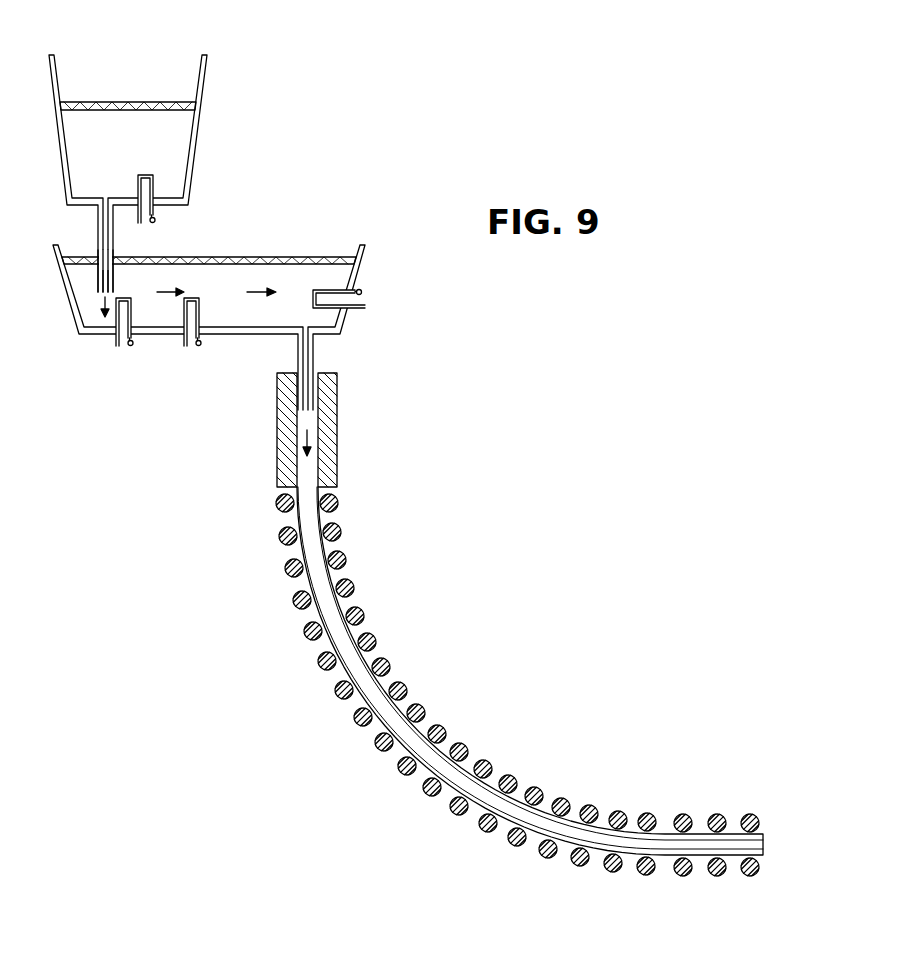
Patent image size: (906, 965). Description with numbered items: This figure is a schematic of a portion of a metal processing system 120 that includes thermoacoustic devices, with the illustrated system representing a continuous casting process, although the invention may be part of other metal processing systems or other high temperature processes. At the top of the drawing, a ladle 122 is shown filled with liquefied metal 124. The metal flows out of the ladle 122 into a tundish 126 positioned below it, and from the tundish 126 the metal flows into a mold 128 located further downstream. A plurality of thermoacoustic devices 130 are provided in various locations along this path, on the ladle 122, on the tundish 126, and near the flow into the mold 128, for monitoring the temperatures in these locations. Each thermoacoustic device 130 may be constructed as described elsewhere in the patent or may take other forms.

The metal processing system 120 is at (306, 97).
The ladle 122 is at (205, 93).
The liquefied metal 124 is at (180, 130).
The tundish 126 is at (68, 304).
The mold 128 is at (340, 417).
The thermoacoustic device 130 is at (157, 214).